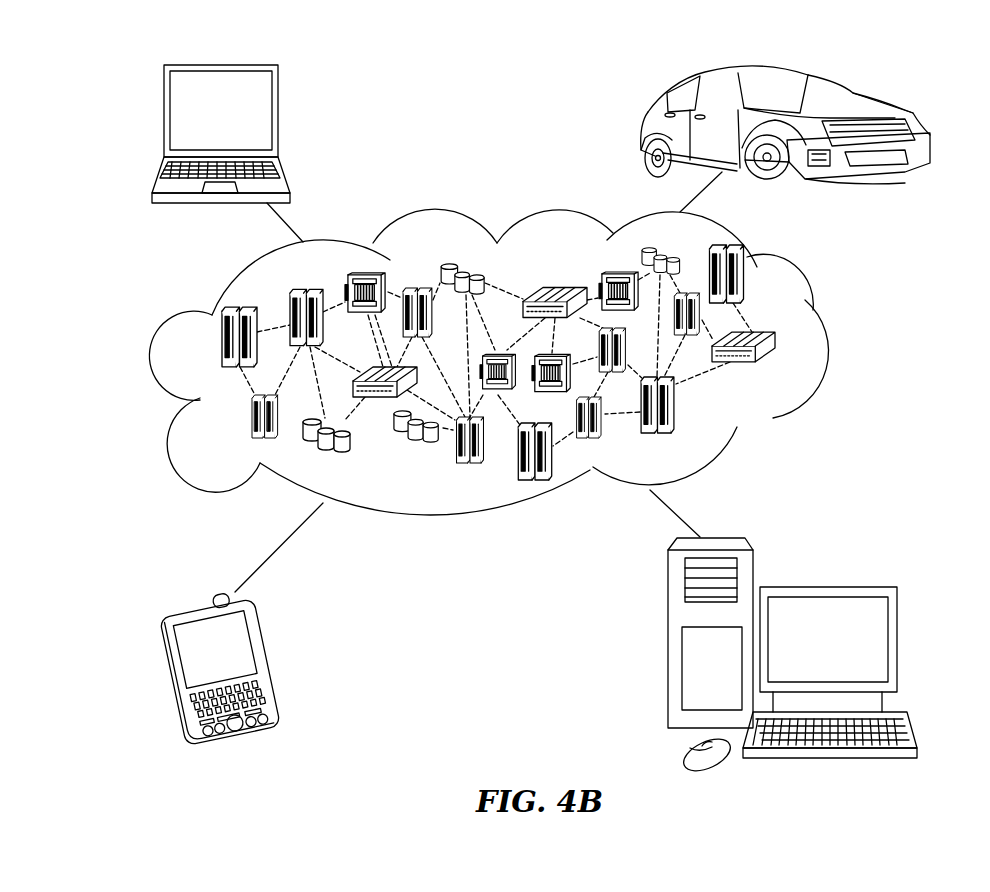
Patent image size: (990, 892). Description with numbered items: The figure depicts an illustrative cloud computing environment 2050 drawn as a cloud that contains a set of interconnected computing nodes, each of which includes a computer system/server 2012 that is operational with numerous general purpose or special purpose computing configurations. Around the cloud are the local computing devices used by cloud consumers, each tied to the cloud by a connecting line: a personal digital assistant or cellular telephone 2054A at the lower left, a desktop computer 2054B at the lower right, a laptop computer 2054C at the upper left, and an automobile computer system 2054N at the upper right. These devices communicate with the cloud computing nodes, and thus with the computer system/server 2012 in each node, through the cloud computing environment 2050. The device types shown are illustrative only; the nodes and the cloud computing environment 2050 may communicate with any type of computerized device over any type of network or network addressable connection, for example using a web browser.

The cloud computing environment 2050 is at (826, 342).
The computer system/server 2012 is at (782, 373).
The personal digital assistant or cellular telephone 2054A is at (272, 663).
The desktop computer 2054B is at (825, 587).
The laptop computer 2054C is at (278, 117).
The automobile computer system 2054N is at (645, 132).